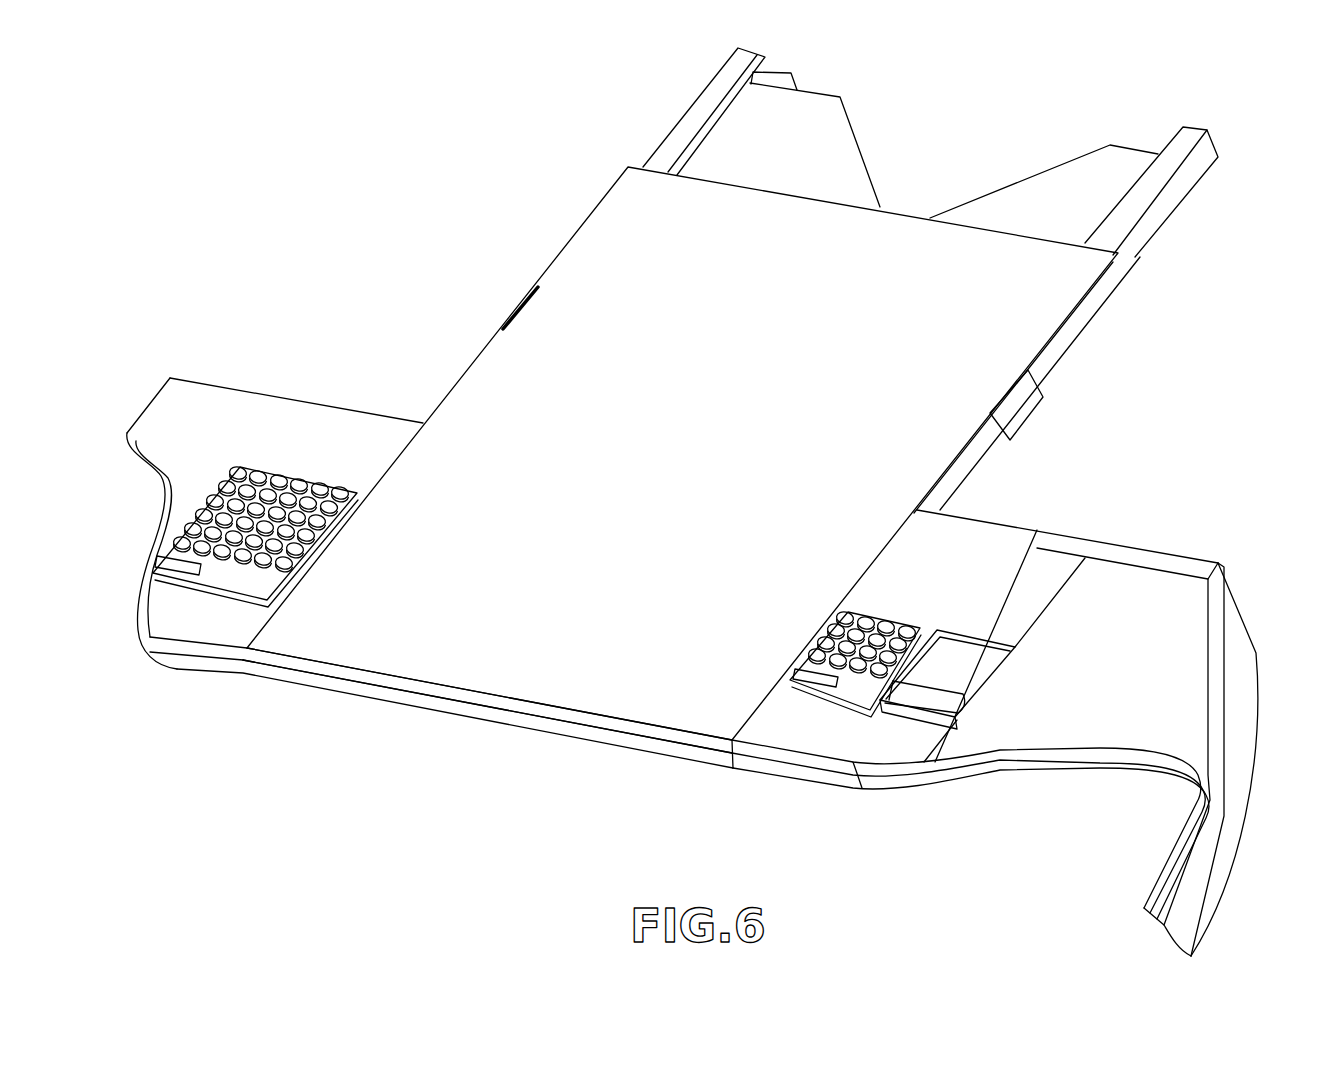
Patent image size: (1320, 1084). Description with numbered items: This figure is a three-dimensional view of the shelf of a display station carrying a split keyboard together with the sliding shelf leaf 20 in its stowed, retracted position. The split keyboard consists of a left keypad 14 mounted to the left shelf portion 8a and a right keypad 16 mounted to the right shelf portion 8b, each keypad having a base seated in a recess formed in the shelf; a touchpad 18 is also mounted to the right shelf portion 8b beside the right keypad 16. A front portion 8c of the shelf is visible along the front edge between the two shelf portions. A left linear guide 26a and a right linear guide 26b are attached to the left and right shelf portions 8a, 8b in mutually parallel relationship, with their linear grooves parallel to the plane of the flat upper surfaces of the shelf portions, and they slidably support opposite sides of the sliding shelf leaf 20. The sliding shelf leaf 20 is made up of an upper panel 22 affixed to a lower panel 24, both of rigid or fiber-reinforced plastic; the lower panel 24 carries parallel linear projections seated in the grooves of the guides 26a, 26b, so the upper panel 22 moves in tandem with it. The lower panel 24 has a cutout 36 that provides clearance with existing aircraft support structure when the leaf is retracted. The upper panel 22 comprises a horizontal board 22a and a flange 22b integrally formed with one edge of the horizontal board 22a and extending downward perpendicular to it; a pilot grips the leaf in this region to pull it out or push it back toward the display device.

The cutout 36 is at (1028, 124).
The sliding shelf leaf 20 is at (656, 762).
The left shelf portion 8a is at (292, 420).
The right shelf portion 8b is at (1138, 591).
The front base portion 8c is at (393, 708).
The left keypad 14 is at (240, 573).
The right keypad 16 is at (858, 683).
The touchpad 18 is at (963, 675).
The upper panel 22 is at (487, 343).
The horizontal board 22a is at (625, 228).
The flange 22b is at (523, 723).
The lower panel 24 is at (865, 160).
The left linear guide 26a is at (708, 83).
The right linear guide 26b is at (1190, 200).